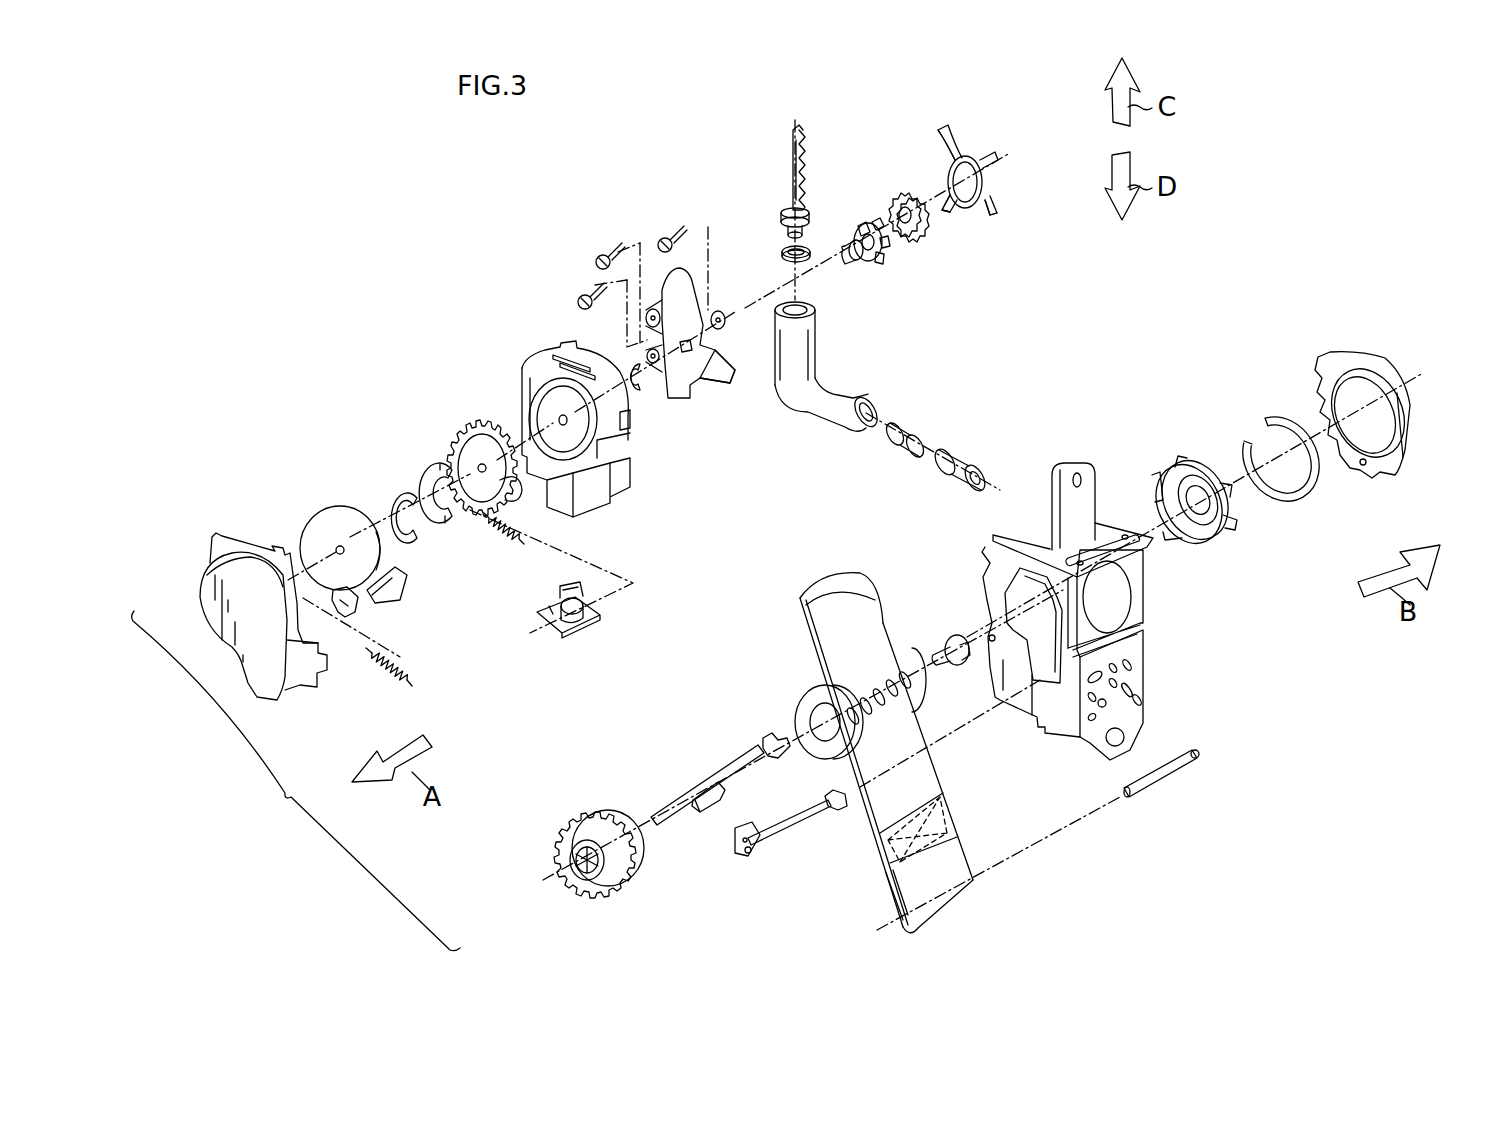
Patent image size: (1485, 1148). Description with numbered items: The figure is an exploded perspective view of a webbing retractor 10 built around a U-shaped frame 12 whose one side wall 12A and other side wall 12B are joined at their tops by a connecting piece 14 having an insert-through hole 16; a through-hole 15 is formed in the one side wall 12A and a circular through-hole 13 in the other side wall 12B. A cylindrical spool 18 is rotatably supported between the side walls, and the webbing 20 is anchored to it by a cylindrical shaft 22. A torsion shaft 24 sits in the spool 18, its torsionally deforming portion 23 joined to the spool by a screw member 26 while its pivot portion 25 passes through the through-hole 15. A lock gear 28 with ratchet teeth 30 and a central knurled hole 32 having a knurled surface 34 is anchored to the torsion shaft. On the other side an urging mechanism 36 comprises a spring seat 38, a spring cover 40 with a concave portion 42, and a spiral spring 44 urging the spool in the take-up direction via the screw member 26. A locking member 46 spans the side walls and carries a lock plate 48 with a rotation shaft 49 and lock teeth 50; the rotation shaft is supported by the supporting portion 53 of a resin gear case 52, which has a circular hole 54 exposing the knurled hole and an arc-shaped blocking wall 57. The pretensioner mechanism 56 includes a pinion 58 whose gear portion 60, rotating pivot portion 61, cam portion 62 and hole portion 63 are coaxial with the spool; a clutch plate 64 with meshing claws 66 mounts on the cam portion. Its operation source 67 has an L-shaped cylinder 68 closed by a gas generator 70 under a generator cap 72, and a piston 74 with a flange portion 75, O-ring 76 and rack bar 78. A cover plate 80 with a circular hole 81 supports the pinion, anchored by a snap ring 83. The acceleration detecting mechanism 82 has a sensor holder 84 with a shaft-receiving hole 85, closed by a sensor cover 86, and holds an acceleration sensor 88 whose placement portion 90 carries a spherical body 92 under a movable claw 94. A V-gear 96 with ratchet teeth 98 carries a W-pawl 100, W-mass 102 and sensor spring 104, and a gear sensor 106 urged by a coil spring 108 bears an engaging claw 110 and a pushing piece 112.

The webbing retractor 10 is at (361, 305).
The frame 12 is at (1085, 644).
The one side wall 12A is at (1066, 735).
The other side wall 12B is at (1136, 572).
The circular through-hole 13 is at (1118, 608).
The connecting piece 14 is at (1073, 490).
The through-hole 15 is at (1022, 562).
The insert-through hole 16 is at (1125, 532).
The spool 18 is at (810, 694).
The webbing 20 is at (846, 570).
The cylindrical shaft 22 is at (1172, 781).
The torsionally deforming portion 23 is at (766, 750).
The torsion shaft 24 is at (732, 762).
The pivot portion 25 is at (696, 796).
The screw member 26 is at (950, 636).
The lock gear 28 is at (596, 819).
The ratchet teeth 30 is at (628, 872).
The knurled hole 32 is at (584, 848).
The knurled surface 34 is at (576, 880).
The urging mechanism 36 is at (1211, 356).
The spring seat 38 is at (1196, 462).
The spring cover 40 is at (1366, 406).
The concave portion 42 is at (1380, 428).
The spiral spring 44 is at (1278, 414).
The locking member 46 is at (804, 835).
The lock plate 48 is at (740, 852).
The rotation shaft 49 is at (752, 858).
The lock teeth 50 is at (750, 828).
The gear case 52 is at (968, 131).
The supporting portion 53 is at (992, 216).
The circular hole 54 is at (985, 185).
The pretensioner mechanism 56 is at (706, 187).
The blocking wall 57 is at (952, 215).
The pinion 58 is at (859, 220).
The gear portion 60 is at (875, 262).
The rotating pivot portion 61 is at (870, 228).
The cam portion 62 is at (882, 260).
The hole portion 63 is at (846, 266).
The clutch plate 64 is at (901, 195).
The meshing claws 66 is at (915, 240).
The operation source 67 is at (832, 430).
The cylinder 68 is at (816, 350).
The gas generator 70 is at (909, 428).
The generator cap 72 is at (966, 458).
The piston 74 is at (781, 137).
The flange portion 75 is at (781, 212).
The O-ring 76 is at (782, 250).
The rack bar 78 is at (804, 134).
The cover plate 80 is at (670, 272).
The circular hole 81 is at (702, 382).
The acceleration detecting mechanism 82 is at (346, 397).
The snap ring 83 is at (640, 395).
The sensor holder 84 is at (543, 350).
The shaft-receiving hole 85 is at (528, 366).
The sensor cover 86 is at (215, 540).
The acceleration sensor 88 is at (577, 606).
The placement portion 90 is at (540, 620).
The spherical body 92 is at (576, 626).
The movable claw 94 is at (578, 590).
The V-gear 96 is at (482, 427).
The ratchet teeth 98 is at (495, 493).
The W-pawl 100 is at (428, 478).
The W-mass 102 is at (392, 505).
The sensor spring 104 is at (498, 540).
The gear sensor 106 is at (318, 517).
The coil spring 108 is at (385, 683).
The engaging claw 110 is at (362, 615).
The pushing piece 112 is at (398, 592).